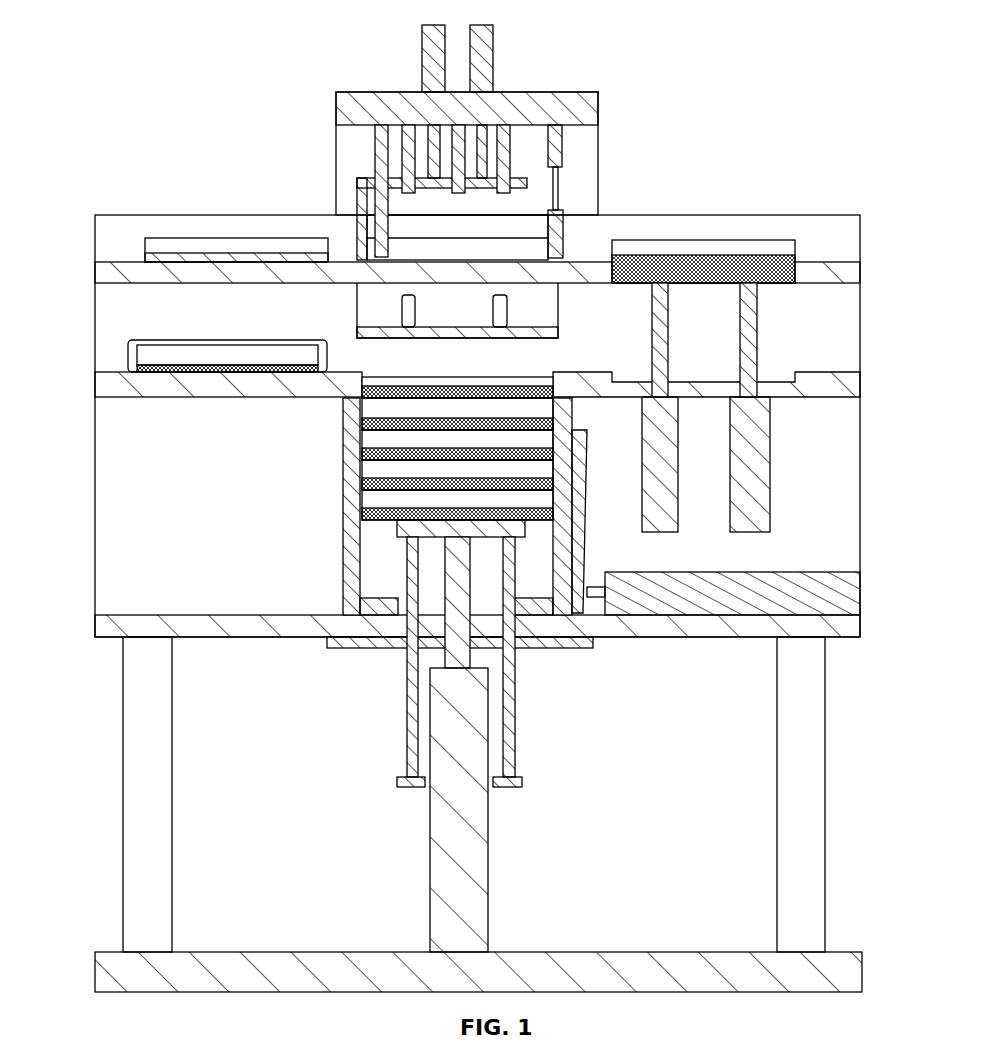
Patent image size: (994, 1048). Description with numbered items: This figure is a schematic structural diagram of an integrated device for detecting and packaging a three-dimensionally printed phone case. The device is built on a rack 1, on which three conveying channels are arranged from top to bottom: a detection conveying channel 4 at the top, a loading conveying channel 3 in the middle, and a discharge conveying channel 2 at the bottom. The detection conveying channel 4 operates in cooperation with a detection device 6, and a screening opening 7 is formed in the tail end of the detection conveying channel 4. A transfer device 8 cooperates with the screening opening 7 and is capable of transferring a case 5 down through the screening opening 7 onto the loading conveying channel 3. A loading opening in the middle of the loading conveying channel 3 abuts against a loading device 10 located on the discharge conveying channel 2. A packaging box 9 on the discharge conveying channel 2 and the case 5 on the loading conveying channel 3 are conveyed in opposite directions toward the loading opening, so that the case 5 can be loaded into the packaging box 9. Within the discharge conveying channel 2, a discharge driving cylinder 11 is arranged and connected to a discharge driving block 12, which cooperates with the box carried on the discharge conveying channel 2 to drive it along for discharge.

The rack 1 is at (802, 927).
The discharge conveying channel 2 is at (127, 625).
The loading conveying channel 3 is at (130, 378).
The detection conveying channel 4 is at (838, 275).
The case 5 is at (223, 258).
The detection device 6 is at (552, 96).
The screening opening 7 is at (708, 282).
The transfer device 8 is at (750, 440).
The packaging box 9 is at (130, 348).
The loading device 10 is at (385, 520).
The discharge driving cylinder 11 is at (836, 594).
The discharge driving block 12 is at (578, 600).